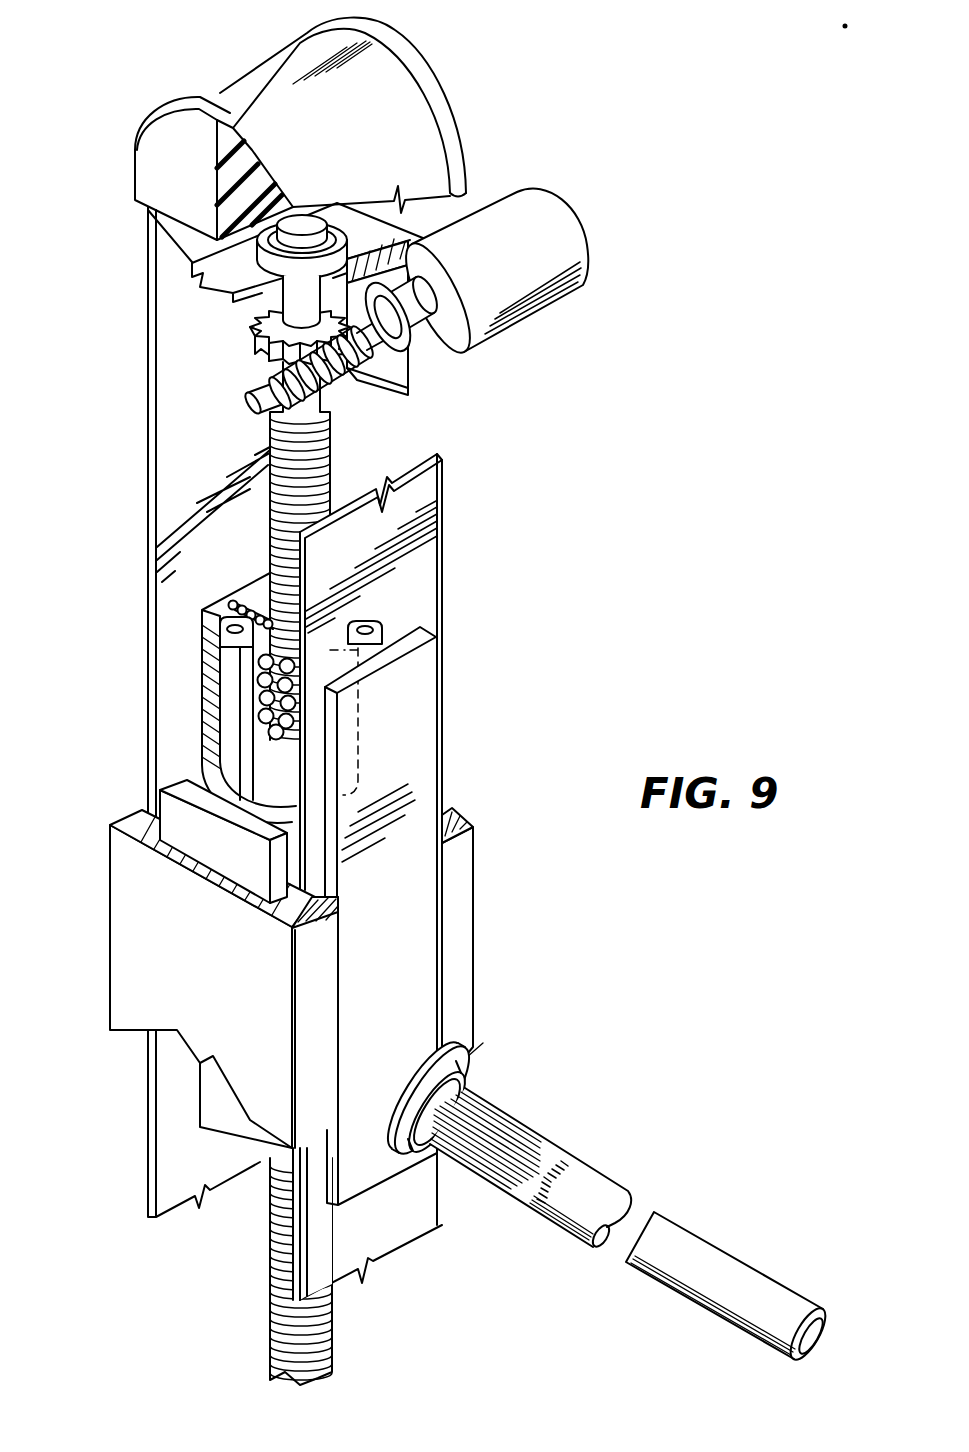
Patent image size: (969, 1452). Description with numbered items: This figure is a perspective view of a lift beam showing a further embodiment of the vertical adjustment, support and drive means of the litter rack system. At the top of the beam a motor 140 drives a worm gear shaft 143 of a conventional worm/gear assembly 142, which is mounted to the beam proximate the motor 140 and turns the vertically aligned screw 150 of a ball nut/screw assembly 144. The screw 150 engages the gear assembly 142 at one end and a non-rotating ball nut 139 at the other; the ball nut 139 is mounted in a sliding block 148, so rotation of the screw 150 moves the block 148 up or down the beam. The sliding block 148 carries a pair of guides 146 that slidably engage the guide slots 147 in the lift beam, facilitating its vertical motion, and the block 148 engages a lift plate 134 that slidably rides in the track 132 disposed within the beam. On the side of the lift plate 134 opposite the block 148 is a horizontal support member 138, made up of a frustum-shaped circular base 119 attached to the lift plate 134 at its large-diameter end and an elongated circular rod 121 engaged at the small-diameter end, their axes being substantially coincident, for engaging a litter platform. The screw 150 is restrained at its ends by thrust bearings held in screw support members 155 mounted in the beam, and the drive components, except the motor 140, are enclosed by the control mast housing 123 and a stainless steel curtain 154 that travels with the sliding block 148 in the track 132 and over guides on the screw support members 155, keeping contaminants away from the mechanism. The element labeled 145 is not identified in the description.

The stainless steel curtain 154 is at (410, 116).
The screw support member 155 is at (398, 240).
The motor 140 is at (548, 220).
The worm/gear assembly 142 is at (262, 343).
The worm gear shaft 143 is at (251, 407).
The ball nut/screw assembly 144 is at (333, 443).
The coupling 145 is at (413, 353).
The sliding block 148 is at (213, 603).
The ball nut 139 is at (262, 736).
The lift plate 134 is at (420, 722).
The guide 146 is at (187, 813).
The guide slot 147 is at (180, 857).
The track 132 is at (327, 880).
The control mast housing 123 is at (475, 886).
The circular base 119 is at (443, 1083).
The horizontal support member 138 is at (563, 1160).
The circular rod 121 is at (567, 1233).
The screw 150 is at (270, 1335).